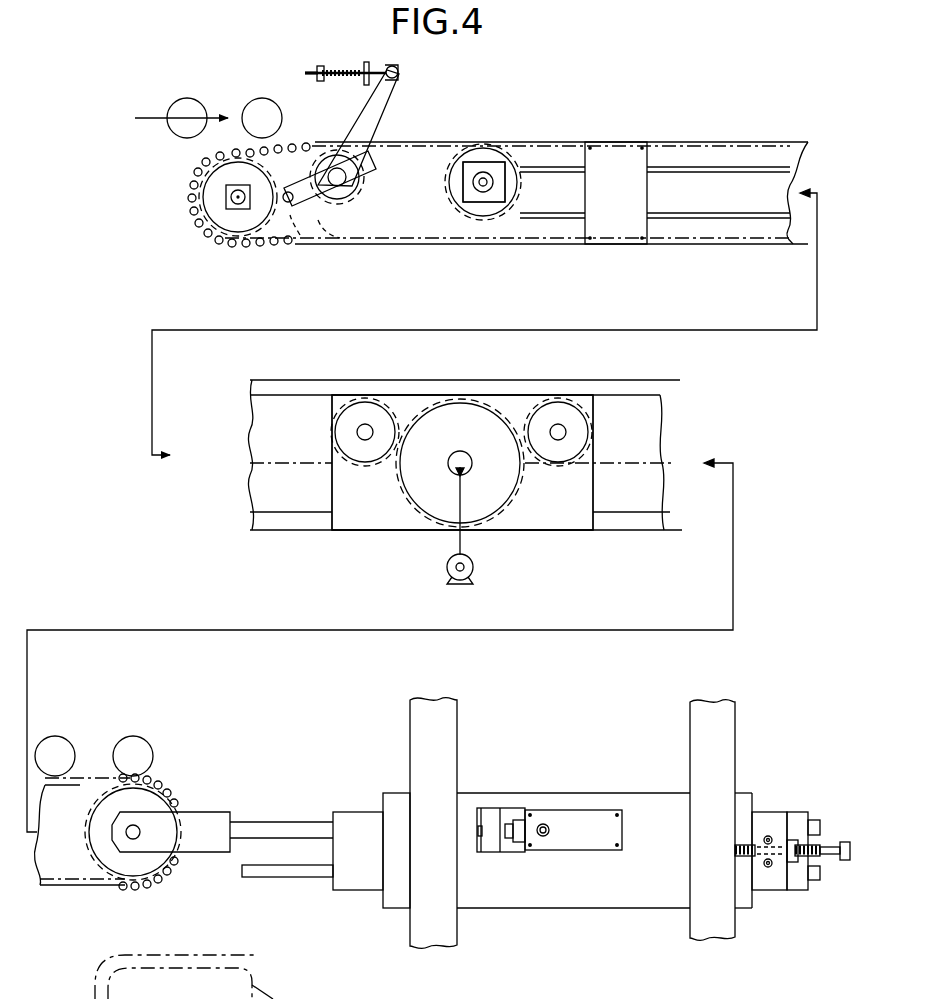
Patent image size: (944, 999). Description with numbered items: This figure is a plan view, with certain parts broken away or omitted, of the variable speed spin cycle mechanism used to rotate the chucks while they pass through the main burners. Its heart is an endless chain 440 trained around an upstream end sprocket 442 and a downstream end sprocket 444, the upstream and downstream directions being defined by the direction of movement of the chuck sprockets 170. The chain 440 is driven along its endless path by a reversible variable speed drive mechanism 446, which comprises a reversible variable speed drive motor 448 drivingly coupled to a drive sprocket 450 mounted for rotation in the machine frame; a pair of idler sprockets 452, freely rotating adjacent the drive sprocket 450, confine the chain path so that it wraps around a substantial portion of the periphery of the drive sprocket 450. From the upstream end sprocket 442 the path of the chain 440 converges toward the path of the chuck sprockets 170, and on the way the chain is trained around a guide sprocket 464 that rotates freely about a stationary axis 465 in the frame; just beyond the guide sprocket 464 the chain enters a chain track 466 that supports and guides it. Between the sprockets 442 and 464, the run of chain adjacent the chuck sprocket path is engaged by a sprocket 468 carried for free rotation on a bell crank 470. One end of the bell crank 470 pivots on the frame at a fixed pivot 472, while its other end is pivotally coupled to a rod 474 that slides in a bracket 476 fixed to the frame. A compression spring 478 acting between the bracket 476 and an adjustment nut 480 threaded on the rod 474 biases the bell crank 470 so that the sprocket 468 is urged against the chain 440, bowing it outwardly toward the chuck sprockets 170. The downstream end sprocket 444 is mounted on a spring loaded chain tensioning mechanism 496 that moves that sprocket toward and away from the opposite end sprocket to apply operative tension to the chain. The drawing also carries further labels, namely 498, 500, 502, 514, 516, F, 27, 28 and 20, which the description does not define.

The endless chain 440 is at (368, 243).
The upstream end sprocket 442 is at (228, 224).
The downstream end sprocket 444 is at (140, 876).
The reversible variable speed drive mechanism 446 is at (425, 540).
The reversible variable speed drive motor 448 is at (474, 568).
The drive sprocket 450 is at (500, 490).
The idler sprockets 452 is at (368, 420).
The guide sprocket 464 is at (486, 155).
The stationary axis 465 is at (493, 205).
The chain track 466 is at (697, 155).
The sprocket 468 is at (352, 198).
The bell crank 470 is at (371, 128).
The fixed pivot 472 is at (297, 216).
The rod 474 is at (362, 84).
The bracket 476 is at (377, 70).
The compression spring 478 is at (337, 71).
The adjustment nut 480 is at (306, 73).
The chuck sprockets 170 is at (58, 752).
The chain tensioning mechanism 496 is at (590, 798).
The shaft hub 498 is at (198, 826).
The shaft 500 is at (282, 828).
The bearing block 502 is at (362, 886).
The guide bar 514 is at (280, 870).
The bearing housing 516 is at (798, 880).
The frame F is at (500, 896).
The section line 27 is at (682, 112).
The section line 28 is at (82, 832).
The section line 20 is at (228, 870).